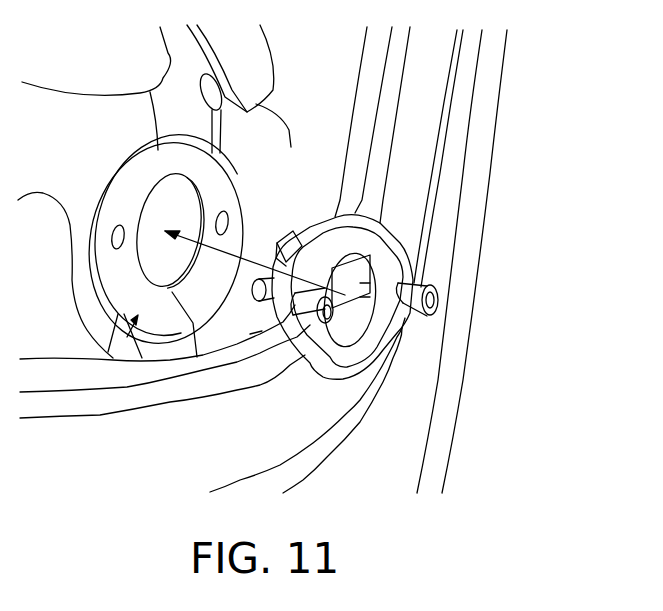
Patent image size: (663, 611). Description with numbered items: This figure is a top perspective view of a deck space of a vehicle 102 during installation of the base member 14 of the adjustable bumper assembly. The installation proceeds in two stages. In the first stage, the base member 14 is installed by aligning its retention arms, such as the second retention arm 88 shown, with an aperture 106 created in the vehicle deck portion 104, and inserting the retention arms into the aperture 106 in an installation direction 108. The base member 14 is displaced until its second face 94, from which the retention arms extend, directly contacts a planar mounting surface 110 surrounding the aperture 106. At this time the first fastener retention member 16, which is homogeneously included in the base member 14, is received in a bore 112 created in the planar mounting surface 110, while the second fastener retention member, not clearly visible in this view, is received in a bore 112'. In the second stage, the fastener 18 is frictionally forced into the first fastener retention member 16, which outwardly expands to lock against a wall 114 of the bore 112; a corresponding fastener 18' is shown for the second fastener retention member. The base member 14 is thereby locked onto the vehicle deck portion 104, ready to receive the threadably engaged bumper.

The vehicle 102 is at (538, 90).
The second retention arm 88 is at (323, 187).
The vehicle deck portion 104 is at (135, 105).
The bore 112' is at (159, 131).
The aperture 106 is at (143, 193).
The wall 114 is at (103, 200).
The bore 112 is at (126, 249).
The planar mounting surface 110 is at (113, 355).
The installation direction 108 is at (291, 147).
The first fastener retention member 16 is at (330, 27).
The second face 94 is at (276, 330).
The base member 14 is at (370, 247).
The fastener 18 is at (295, 357).
The nut 18' is at (461, 277).